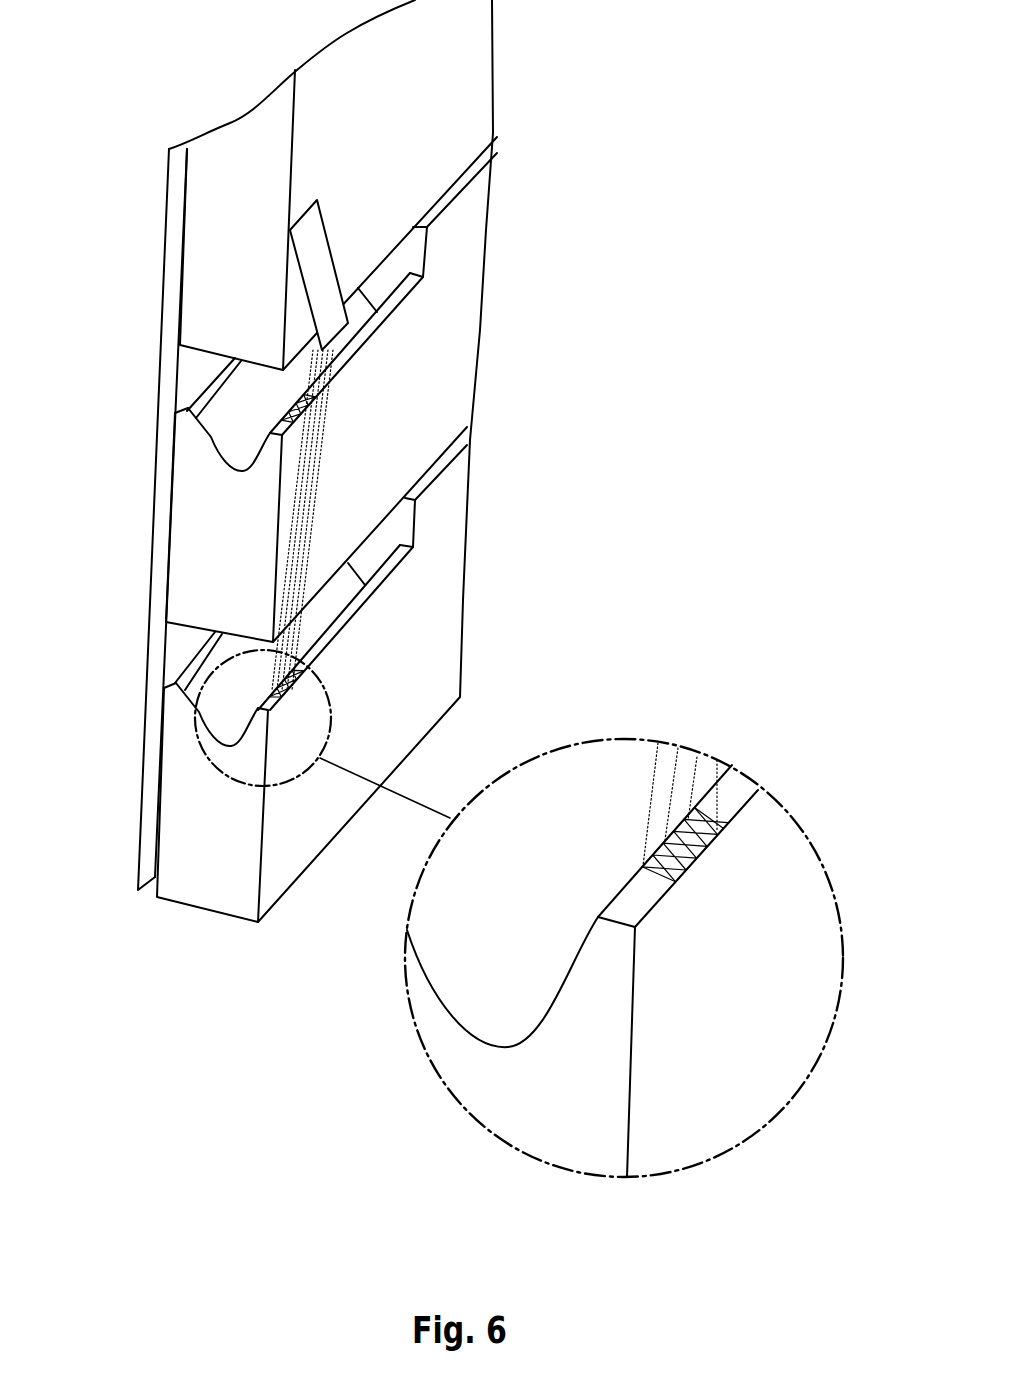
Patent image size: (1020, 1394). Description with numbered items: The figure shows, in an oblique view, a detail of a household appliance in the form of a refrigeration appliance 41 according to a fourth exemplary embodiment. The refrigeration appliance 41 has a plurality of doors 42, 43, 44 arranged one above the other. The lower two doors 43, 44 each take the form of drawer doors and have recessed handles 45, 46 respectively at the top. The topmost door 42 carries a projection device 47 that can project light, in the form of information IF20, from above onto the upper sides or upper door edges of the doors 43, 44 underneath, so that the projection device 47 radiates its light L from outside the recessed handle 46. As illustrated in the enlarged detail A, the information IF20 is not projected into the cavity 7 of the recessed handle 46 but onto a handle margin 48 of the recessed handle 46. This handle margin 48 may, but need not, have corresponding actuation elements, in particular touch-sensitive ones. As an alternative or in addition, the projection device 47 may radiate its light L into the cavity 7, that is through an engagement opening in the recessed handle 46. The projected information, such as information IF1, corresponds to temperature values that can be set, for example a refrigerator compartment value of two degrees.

The refrigeration appliance 41 is at (662, 318).
The topmost door 42 is at (212, 200).
The door 43 is at (210, 545).
The door 44 is at (198, 822).
The recessed handle 45 is at (238, 438).
The recessed handle 46 is at (227, 713).
The projection device 47 is at (285, 323).
The handle margin 48 is at (737, 785).
The light L is at (318, 475).
The information IF20 is at (728, 820).
The information IF1 is at (808, 685).
The cavity 7 is at (527, 897).
The enlarged detail A is at (395, 1053).